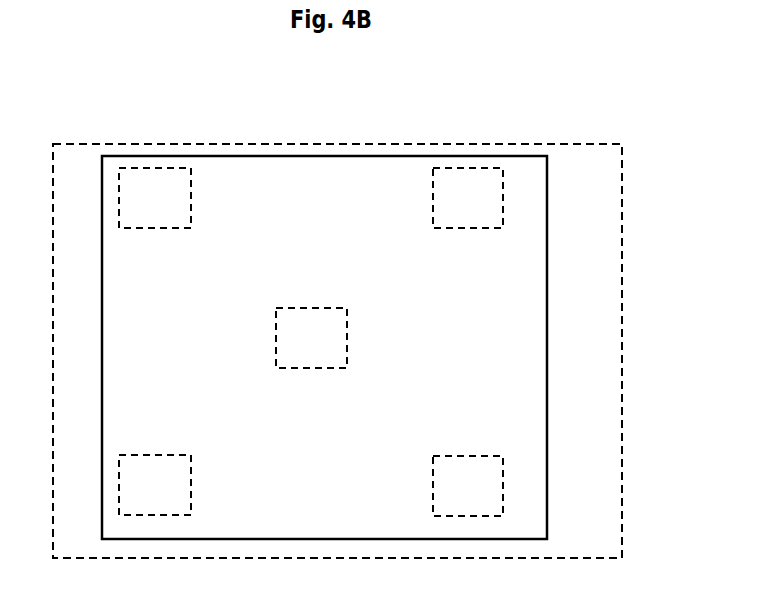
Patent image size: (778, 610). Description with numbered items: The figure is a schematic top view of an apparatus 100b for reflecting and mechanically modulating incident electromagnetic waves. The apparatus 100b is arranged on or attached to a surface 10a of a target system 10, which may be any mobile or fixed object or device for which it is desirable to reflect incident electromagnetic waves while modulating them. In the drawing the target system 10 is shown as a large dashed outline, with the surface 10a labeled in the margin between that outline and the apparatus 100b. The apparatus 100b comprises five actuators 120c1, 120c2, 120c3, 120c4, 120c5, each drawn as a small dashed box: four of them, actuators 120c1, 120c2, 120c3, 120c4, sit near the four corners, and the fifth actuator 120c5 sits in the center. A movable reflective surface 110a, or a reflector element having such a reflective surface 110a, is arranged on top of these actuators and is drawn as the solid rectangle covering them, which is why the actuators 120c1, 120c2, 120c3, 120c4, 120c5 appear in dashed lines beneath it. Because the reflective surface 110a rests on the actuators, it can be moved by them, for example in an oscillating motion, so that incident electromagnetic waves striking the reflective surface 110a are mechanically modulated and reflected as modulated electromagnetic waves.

The target system 10 is at (622, 168).
The surface 10a is at (603, 222).
The apparatus 100b is at (108, 98).
The movable reflective surface 110a is at (302, 222).
The actuator 120c1 is at (184, 206).
The actuator 120c2 is at (497, 206).
The actuator 120c3 is at (184, 495).
The actuator 120c4 is at (497, 495).
The actuator 120c5 is at (341, 346).